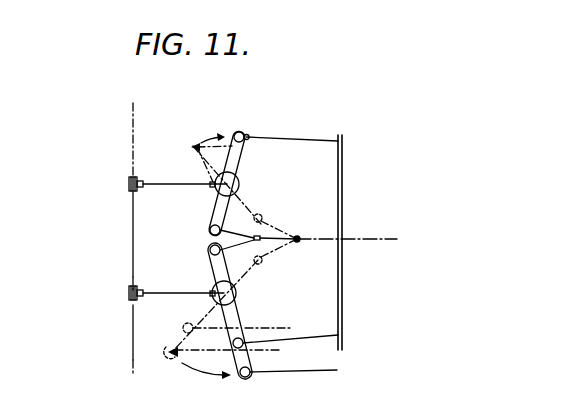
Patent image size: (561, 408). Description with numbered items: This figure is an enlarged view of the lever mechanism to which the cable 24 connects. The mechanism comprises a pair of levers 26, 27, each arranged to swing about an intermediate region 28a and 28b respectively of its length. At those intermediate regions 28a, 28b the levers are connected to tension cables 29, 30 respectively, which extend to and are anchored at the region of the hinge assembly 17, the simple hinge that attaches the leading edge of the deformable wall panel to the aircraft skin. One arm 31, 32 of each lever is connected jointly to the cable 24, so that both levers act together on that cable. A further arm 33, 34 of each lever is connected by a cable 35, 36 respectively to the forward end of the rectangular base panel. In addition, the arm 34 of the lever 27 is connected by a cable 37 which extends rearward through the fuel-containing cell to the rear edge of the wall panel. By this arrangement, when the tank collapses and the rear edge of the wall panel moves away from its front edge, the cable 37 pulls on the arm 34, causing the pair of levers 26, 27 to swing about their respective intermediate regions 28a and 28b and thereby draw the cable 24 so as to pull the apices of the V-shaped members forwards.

The hinge assembly 17 is at (133, 226).
The tension cable 29 is at (157, 183).
The tension cable 30 is at (157, 293).
The lever 26 is at (232, 160).
The arm 33 is at (239, 132).
The intermediate region 28a is at (300, 193).
The arm 31 is at (214, 209).
The arm 32 is at (213, 263).
The cable 24 is at (365, 239).
The cable 35 is at (310, 140).
The intermediate region 28b is at (306, 303).
The arm 34 is at (247, 322).
The cable 36 is at (354, 311).
The lever 27 is at (252, 371).
The cable 37 is at (337, 369).